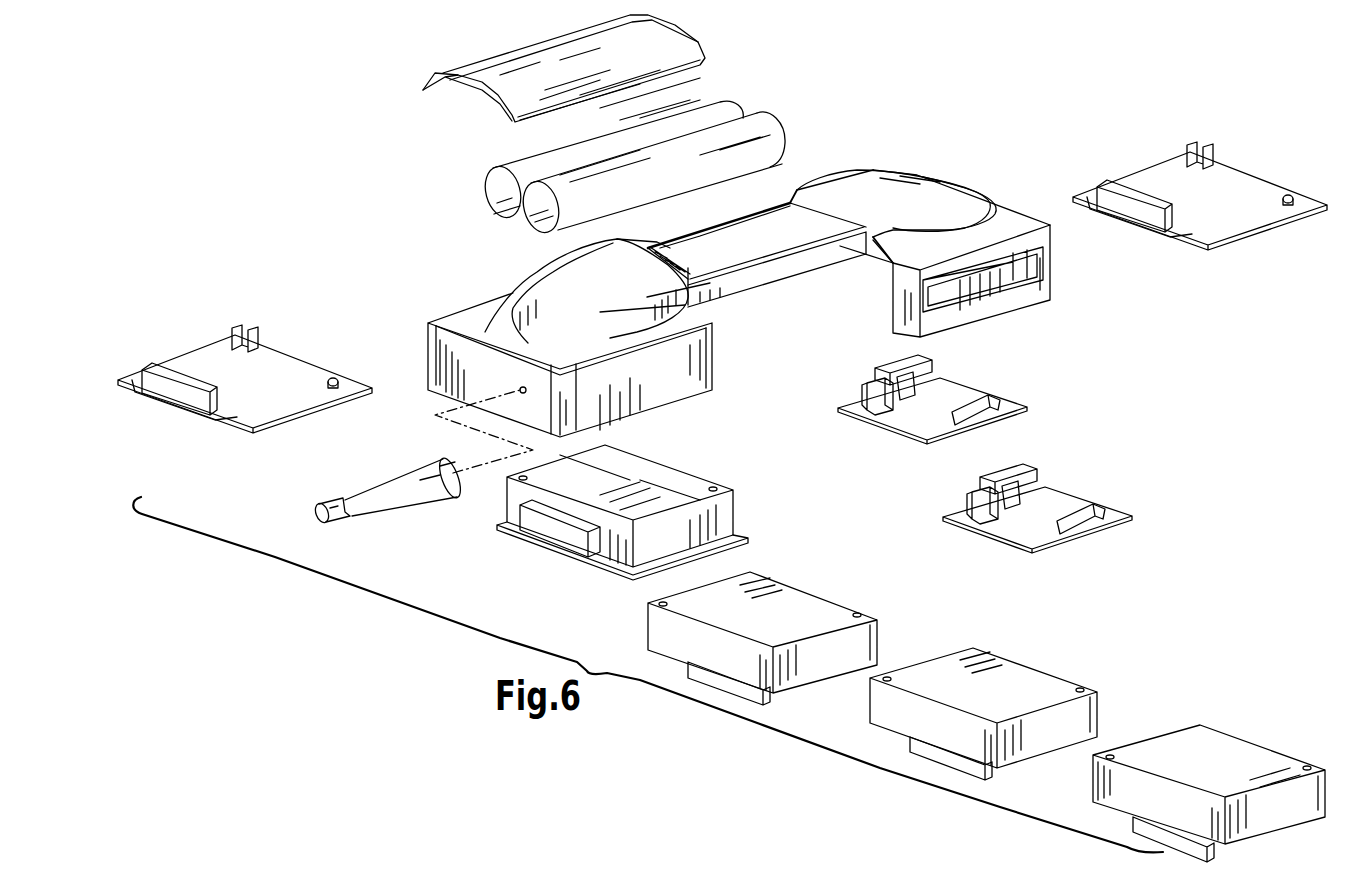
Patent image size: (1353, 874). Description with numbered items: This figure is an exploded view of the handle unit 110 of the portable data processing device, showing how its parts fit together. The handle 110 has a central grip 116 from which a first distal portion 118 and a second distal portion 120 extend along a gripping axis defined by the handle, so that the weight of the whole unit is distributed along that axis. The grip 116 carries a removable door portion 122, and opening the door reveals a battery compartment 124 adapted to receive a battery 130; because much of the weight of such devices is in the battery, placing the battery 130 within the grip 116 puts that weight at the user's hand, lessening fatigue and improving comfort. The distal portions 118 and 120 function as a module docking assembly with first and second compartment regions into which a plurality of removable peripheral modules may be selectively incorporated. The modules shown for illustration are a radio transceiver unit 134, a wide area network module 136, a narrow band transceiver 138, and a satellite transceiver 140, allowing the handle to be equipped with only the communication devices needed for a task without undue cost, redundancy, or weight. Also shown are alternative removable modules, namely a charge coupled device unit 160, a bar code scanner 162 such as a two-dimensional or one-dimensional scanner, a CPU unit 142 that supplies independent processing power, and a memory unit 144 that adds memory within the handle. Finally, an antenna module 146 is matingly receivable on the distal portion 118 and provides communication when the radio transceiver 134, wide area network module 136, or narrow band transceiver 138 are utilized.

The handle unit 110 is at (962, 135).
The grip 116 is at (748, 293).
The first distal portion 118 is at (657, 410).
The second distal portion 120 is at (1033, 307).
The removable door portion 122 is at (695, 52).
The battery compartment 124 is at (712, 247).
The battery 130 is at (770, 133).
The radio transceiver unit 134 is at (710, 515).
The wide area network module 136 is at (847, 603).
The narrow band transceiver 138 is at (1028, 667).
The satellite transceiver 140 is at (1213, 733).
The CPU unit 142 is at (293, 417).
The memory unit 144 is at (1273, 230).
The antenna module 146 is at (363, 513).
The charge coupled device unit 160 is at (1007, 407).
The bar code scanner 162 is at (1060, 505).